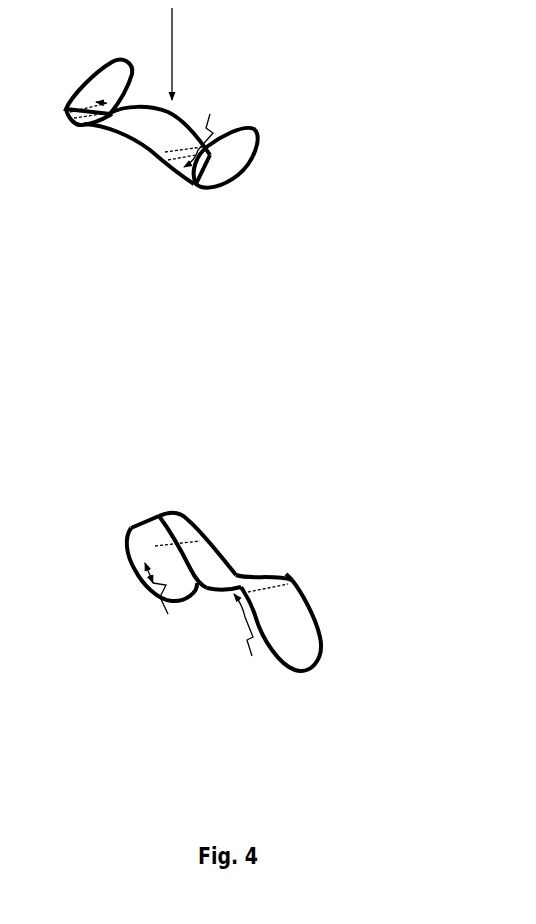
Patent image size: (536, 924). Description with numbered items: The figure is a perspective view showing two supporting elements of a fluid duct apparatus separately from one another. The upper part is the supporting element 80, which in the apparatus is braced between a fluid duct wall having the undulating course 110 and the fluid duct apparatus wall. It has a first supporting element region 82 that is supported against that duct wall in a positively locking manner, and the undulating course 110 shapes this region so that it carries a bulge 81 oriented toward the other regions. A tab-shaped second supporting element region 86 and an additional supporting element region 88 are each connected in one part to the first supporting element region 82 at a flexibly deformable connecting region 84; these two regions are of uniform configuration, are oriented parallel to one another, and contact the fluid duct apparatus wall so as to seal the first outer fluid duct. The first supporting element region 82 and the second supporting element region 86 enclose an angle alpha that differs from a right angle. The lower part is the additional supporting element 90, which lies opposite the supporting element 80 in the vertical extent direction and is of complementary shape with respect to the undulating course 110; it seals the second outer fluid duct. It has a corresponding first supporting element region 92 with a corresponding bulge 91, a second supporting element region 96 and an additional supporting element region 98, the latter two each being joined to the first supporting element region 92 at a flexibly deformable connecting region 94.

The supporting element 80 is at (180, 155).
The bulge 81 is at (179, 108).
The first supporting element region 82 is at (148, 146).
The flexibly deformable connecting region 84 is at (77, 126).
The second supporting element region 86 is at (103, 64).
The additional supporting element region 88 is at (257, 160).
The additional supporting element 90 is at (230, 554).
The bulge 91 is at (225, 595).
The first supporting element region 92 is at (238, 566).
The flexibly deformable connecting region 94 is at (159, 514).
The second supporting element region 96 is at (148, 588).
The additional supporting element region 98 is at (326, 620).
The undulating course 110 is at (233, 556).